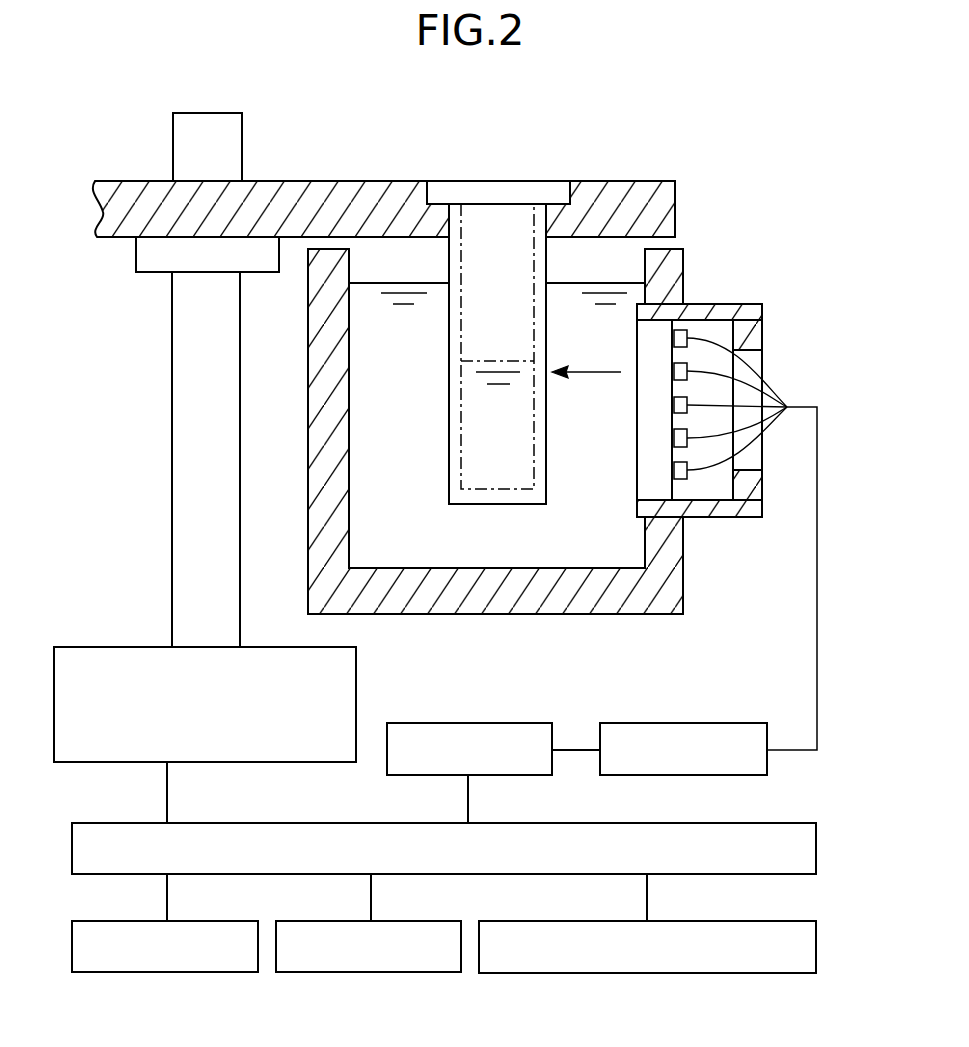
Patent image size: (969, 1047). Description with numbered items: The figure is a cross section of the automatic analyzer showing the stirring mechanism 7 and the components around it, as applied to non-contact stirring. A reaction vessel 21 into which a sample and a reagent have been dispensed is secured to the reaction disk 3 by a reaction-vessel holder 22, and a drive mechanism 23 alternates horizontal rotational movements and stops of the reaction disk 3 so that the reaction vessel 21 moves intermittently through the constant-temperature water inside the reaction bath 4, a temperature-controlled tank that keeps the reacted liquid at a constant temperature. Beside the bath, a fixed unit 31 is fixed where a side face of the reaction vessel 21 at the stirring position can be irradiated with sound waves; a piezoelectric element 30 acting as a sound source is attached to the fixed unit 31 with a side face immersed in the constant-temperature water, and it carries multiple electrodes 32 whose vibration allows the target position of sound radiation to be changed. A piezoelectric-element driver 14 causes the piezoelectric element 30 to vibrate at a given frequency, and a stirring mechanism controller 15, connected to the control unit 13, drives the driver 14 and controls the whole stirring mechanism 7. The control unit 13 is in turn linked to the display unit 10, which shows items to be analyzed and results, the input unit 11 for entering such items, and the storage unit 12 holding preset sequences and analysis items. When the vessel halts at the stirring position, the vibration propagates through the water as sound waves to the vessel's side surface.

The reaction disk 3 is at (243, 132).
The reaction bath 4 is at (412, 614).
The stirring mechanism 7 is at (817, 660).
The display unit 10 is at (158, 972).
The input unit 11 is at (365, 972).
The storage unit 12 is at (652, 973).
The control unit 13 is at (367, 823).
The piezoelectric-element driver 14 is at (683, 723).
The stirring mechanism controller 15 is at (470, 723).
The reaction vessel 21 is at (532, 181).
The reaction-vessel holder 22 is at (625, 181).
The drive mechanism 23 is at (109, 647).
The piezoelectric element 30 is at (637, 467).
The fixed unit 31 is at (762, 328).
The electrodes 32 is at (680, 330).